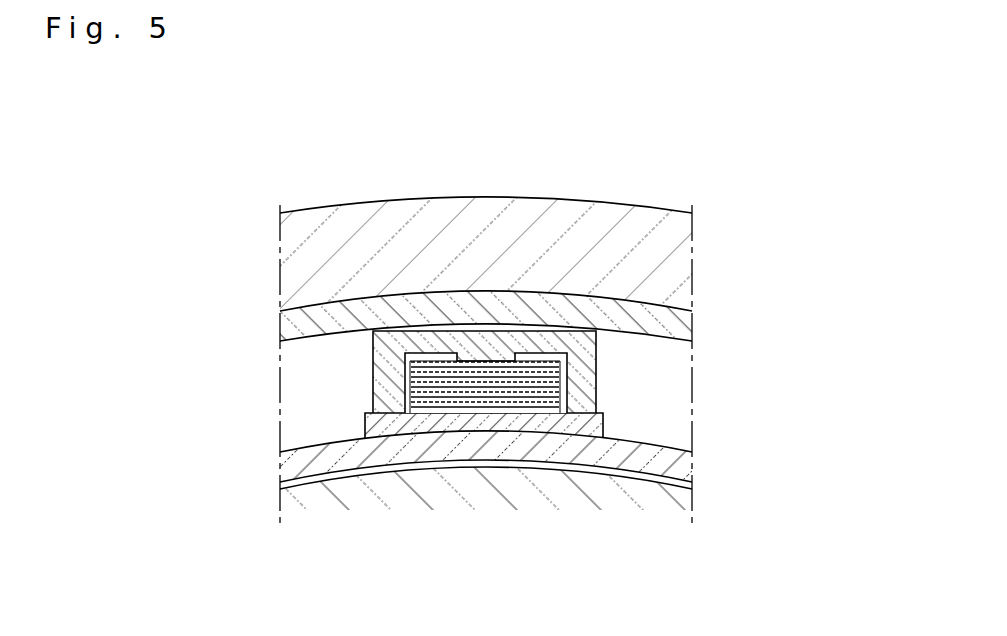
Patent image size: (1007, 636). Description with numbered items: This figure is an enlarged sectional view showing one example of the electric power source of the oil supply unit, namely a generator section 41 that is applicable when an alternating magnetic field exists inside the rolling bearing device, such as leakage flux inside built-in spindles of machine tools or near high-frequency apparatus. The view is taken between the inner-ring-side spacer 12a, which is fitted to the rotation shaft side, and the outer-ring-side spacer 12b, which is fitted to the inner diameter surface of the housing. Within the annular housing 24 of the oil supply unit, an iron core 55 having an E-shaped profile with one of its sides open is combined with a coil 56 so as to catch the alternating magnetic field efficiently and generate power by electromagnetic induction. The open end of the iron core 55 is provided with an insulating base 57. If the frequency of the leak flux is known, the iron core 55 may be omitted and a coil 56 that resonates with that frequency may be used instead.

The inner-ring-side spacer 12a is at (667, 498).
The outer-ring-side spacer 12b is at (668, 270).
The annular housing 24 is at (640, 341).
The generator section 41 is at (484, 322).
The iron core 55 is at (548, 340).
The coil 56 is at (527, 402).
The insulating base 57 is at (421, 432).